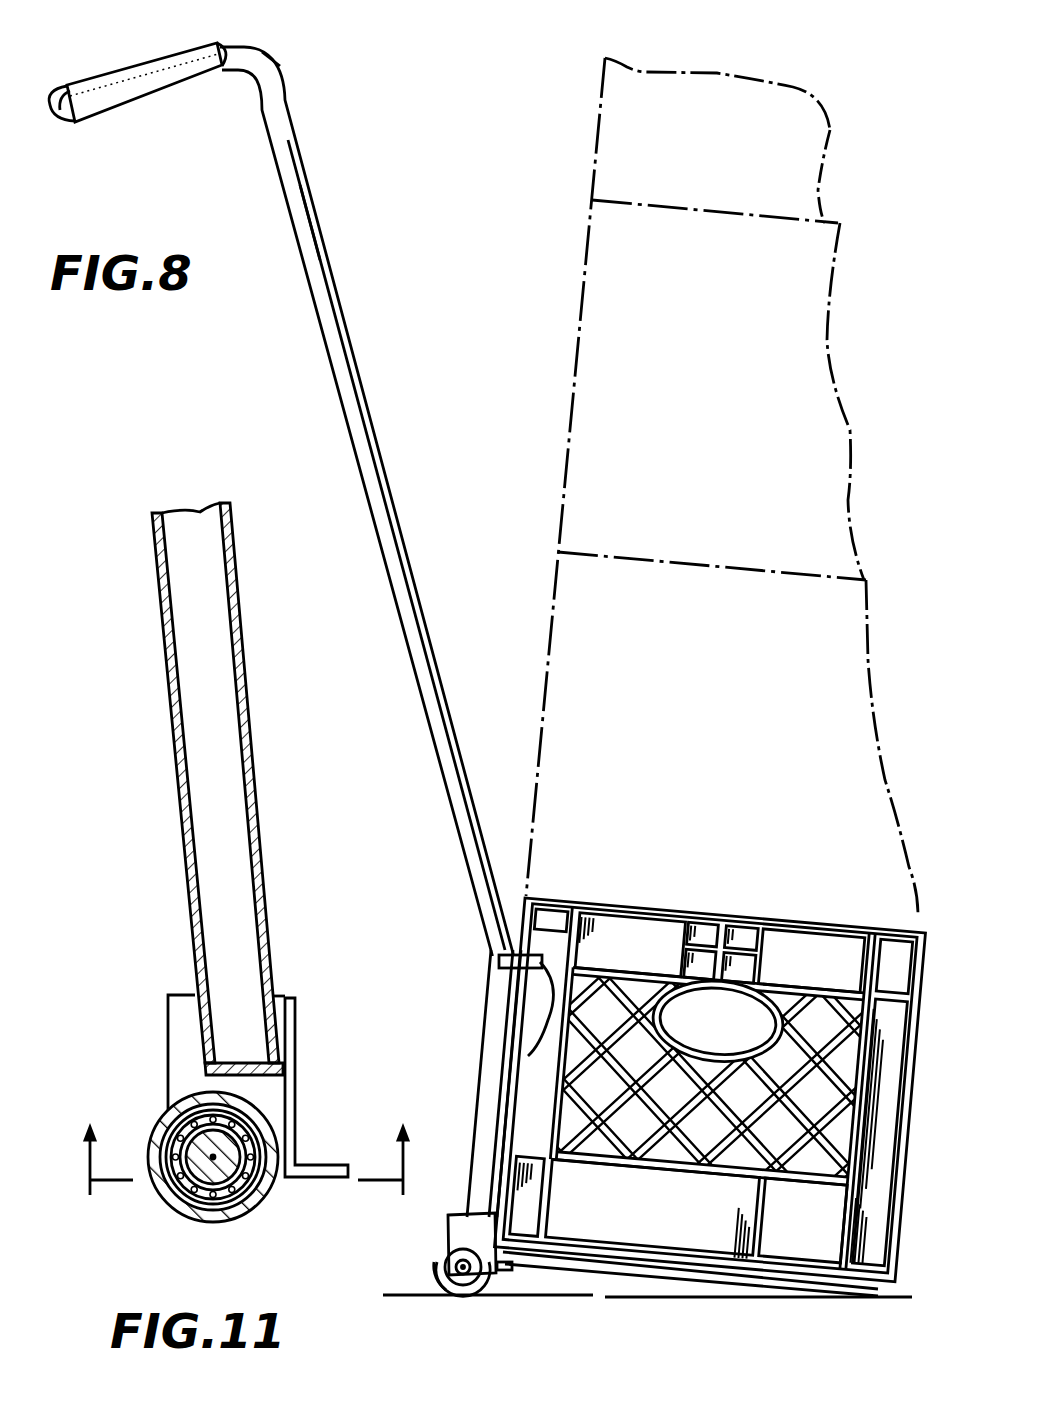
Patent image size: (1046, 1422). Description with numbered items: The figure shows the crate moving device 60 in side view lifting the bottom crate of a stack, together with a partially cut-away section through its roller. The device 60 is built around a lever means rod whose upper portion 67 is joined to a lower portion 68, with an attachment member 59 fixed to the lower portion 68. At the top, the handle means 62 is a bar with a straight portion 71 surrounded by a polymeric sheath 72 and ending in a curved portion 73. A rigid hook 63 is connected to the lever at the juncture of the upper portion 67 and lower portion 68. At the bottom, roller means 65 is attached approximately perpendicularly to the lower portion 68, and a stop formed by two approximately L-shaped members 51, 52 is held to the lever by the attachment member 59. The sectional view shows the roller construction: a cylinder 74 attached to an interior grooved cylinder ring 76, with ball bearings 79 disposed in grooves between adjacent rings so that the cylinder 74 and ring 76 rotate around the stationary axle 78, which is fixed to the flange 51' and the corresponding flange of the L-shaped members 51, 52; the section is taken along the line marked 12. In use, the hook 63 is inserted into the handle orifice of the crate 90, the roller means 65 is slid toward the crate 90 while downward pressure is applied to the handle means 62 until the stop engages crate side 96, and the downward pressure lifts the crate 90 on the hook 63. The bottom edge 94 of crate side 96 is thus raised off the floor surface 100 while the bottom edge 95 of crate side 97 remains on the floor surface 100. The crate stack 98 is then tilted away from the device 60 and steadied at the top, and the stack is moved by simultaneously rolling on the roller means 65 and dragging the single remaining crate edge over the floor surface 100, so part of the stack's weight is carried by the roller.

In FIG. 8, the device 60 is at (360, 330).
In FIG. 8, the handle means 62 is at (95, 78).
In FIG. 8, the upper portion 67 is at (407, 548).
In FIG. 8, the lower portion 68 is at (482, 1042).
In FIG. 11, the lower portion 68 is at (244, 660).
In FIG. 8, the straight portion 71 is at (220, 70).
In FIG. 8, the polymeric sheath 72 is at (112, 112).
In FIG. 8, the curved portion 73 is at (52, 115).
In FIG. 8, the hook 63 is at (510, 960).
In FIG. 8, the roller means 65 is at (440, 1232).
In FIG. 11, the roller means 65 is at (150, 1028).
In FIG. 8, the L shaped member 51 is at (480, 1297).
In FIG. 8, the flange 51' is at (409, 1268).
In FIG. 8, the bottom edge 94 is at (545, 1272).
In FIG. 8, the floor surface 100 is at (640, 1297).
In FIG. 8, the crate 90 is at (707, 1222).
In FIG. 8, the crate side 96 is at (507, 1213).
In FIG. 8, the bottom edge 95 is at (857, 1296).
In FIG. 8, the crate side 97 is at (912, 1194).
In FIG. 8, the crate stack 98 is at (587, 226).
In FIG. 11, the attachment member 59 is at (283, 997).
In FIG. 11, the L shaped member 52 is at (296, 1073).
In FIG. 11, the cylinder 74 is at (160, 1200).
In FIG. 11, the interior grooved cylinder ring 76 is at (210, 1204).
In FIG. 11, the axle 78 is at (223, 1180).
In FIG. 11, the ball bearings 79 is at (263, 1190).
In FIG. 11, the section line 12- 12 is at (255, 1144).